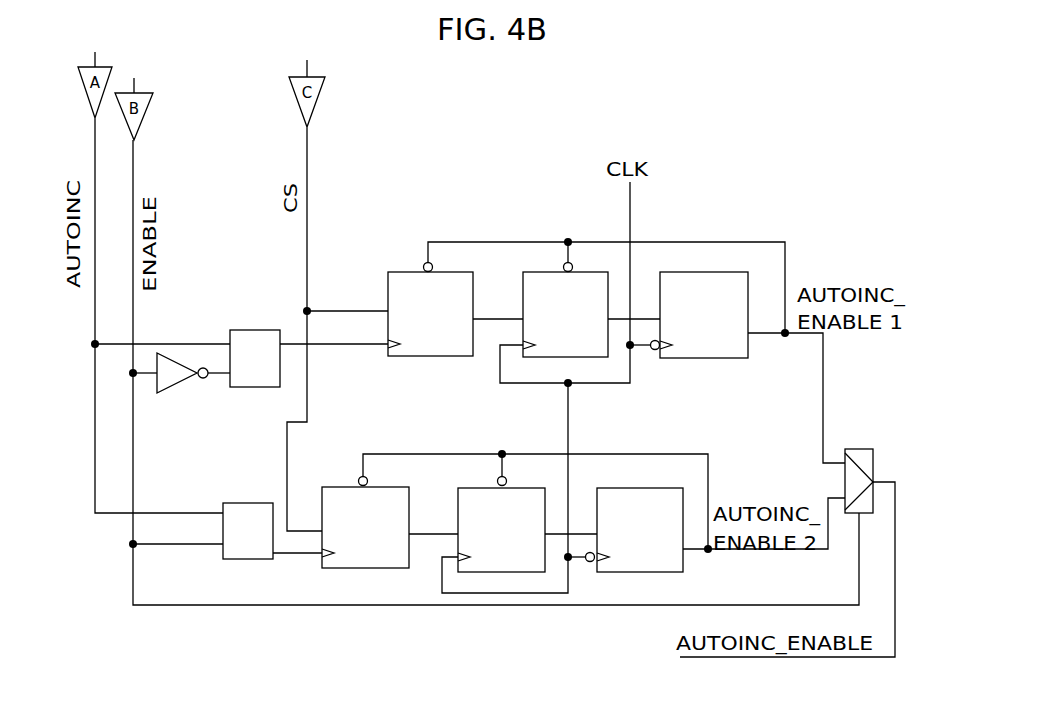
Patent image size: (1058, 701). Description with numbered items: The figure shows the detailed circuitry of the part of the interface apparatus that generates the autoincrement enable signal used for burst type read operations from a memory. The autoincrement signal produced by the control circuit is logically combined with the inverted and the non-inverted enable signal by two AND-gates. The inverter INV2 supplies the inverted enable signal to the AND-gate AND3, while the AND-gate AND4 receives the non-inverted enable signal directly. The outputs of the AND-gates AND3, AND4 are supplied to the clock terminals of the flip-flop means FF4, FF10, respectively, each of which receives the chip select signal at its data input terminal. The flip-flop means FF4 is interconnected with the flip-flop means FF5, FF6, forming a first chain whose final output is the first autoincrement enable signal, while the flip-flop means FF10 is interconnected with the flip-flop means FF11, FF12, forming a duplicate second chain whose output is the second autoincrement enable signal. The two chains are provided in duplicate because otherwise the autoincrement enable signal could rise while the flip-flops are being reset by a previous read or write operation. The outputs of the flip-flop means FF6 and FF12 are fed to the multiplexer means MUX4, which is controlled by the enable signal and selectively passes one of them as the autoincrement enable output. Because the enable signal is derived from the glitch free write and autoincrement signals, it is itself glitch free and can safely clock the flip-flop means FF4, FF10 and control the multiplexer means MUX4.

The inverter INV2 is at (170, 389).
The AND-gate AND3 is at (255, 358).
The AND-gate AND4 is at (248, 531).
The flip-flop means FF4 is at (388, 283).
The flip-flop means FF5 is at (523, 283).
The flip-flop means FF6 is at (740, 270).
The flip-flop means FF10 is at (322, 497).
The flip-flop means FF11 is at (458, 498).
The flip-flop means FF12 is at (675, 486).
The multiplexer means MUX4 is at (845, 478).